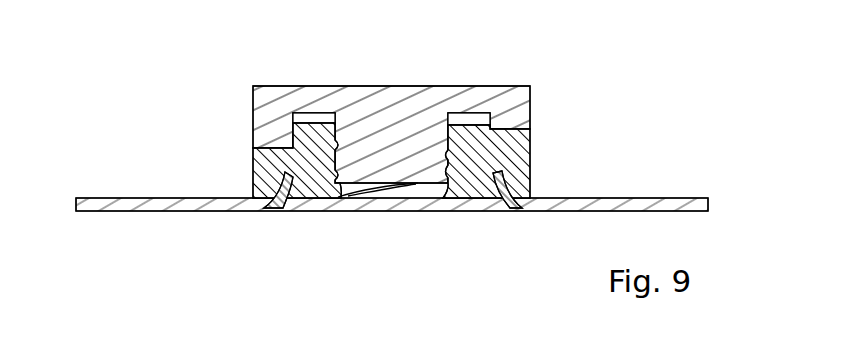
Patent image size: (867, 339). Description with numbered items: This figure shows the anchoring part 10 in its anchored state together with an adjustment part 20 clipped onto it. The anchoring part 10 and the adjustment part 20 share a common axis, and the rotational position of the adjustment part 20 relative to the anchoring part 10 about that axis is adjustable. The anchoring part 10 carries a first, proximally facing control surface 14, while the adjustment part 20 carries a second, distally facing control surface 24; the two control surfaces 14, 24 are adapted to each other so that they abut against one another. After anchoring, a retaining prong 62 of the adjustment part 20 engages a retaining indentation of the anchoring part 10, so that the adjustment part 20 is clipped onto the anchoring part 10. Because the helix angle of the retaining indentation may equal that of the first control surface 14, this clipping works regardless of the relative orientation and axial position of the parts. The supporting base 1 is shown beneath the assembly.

The circuit board 1 is at (670, 207).
The anchoring part 10 is at (305, 153).
The first control surface 14 is at (512, 125).
The adjustment part 20 is at (423, 97).
The second control surface 24 is at (500, 140).
The retaining prong 62 is at (343, 188).